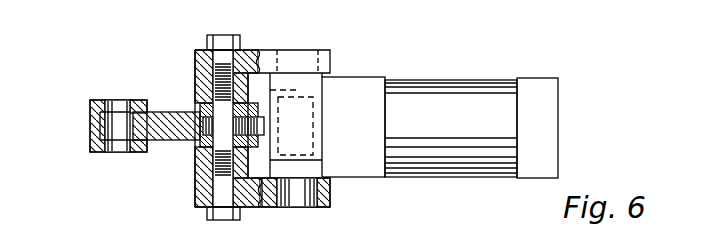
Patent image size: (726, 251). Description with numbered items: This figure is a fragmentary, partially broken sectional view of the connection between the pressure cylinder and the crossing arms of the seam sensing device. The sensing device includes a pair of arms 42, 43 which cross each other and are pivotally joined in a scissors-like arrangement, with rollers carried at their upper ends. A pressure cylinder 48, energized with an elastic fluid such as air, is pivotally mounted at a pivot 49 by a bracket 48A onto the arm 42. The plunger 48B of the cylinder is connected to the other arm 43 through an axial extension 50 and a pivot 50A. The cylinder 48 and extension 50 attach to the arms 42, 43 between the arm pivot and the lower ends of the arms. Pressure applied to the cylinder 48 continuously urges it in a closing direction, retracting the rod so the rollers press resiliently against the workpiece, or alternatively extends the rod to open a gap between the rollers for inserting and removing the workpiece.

The arm 42 is at (202, 162).
The arm 43 is at (95, 154).
The pressure cylinder 48 is at (433, 152).
The bracket 48A is at (257, 204).
The plunger 48B is at (264, 120).
The pivot 49 is at (293, 198).
The axial extension 50 is at (177, 141).
The pivot 50A is at (118, 145).